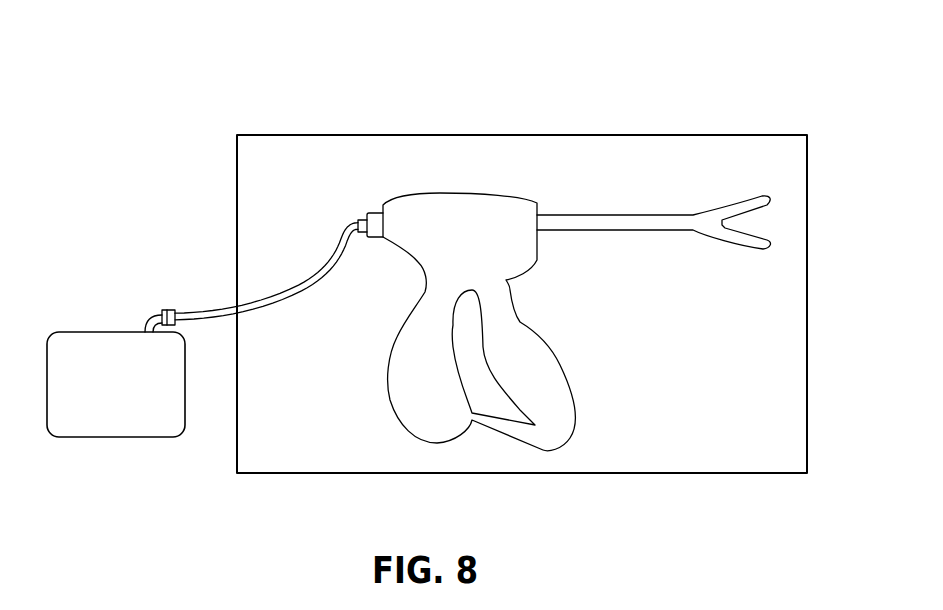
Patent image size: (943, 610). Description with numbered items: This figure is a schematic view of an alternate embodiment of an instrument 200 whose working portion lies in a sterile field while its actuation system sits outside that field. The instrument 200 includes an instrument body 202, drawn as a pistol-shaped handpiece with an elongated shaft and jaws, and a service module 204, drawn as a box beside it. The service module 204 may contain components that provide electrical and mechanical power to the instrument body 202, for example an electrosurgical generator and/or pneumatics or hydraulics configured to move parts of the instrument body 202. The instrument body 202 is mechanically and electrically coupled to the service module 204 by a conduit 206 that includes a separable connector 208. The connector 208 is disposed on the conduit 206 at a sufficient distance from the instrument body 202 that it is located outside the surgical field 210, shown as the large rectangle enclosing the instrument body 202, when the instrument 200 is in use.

The instrument 200 is at (243, 76).
The instrument body 202 is at (442, 195).
The service module 204 is at (97, 332).
The conduit 206 is at (322, 272).
The separable connector 208 is at (169, 310).
The surgical field 210 is at (392, 135).